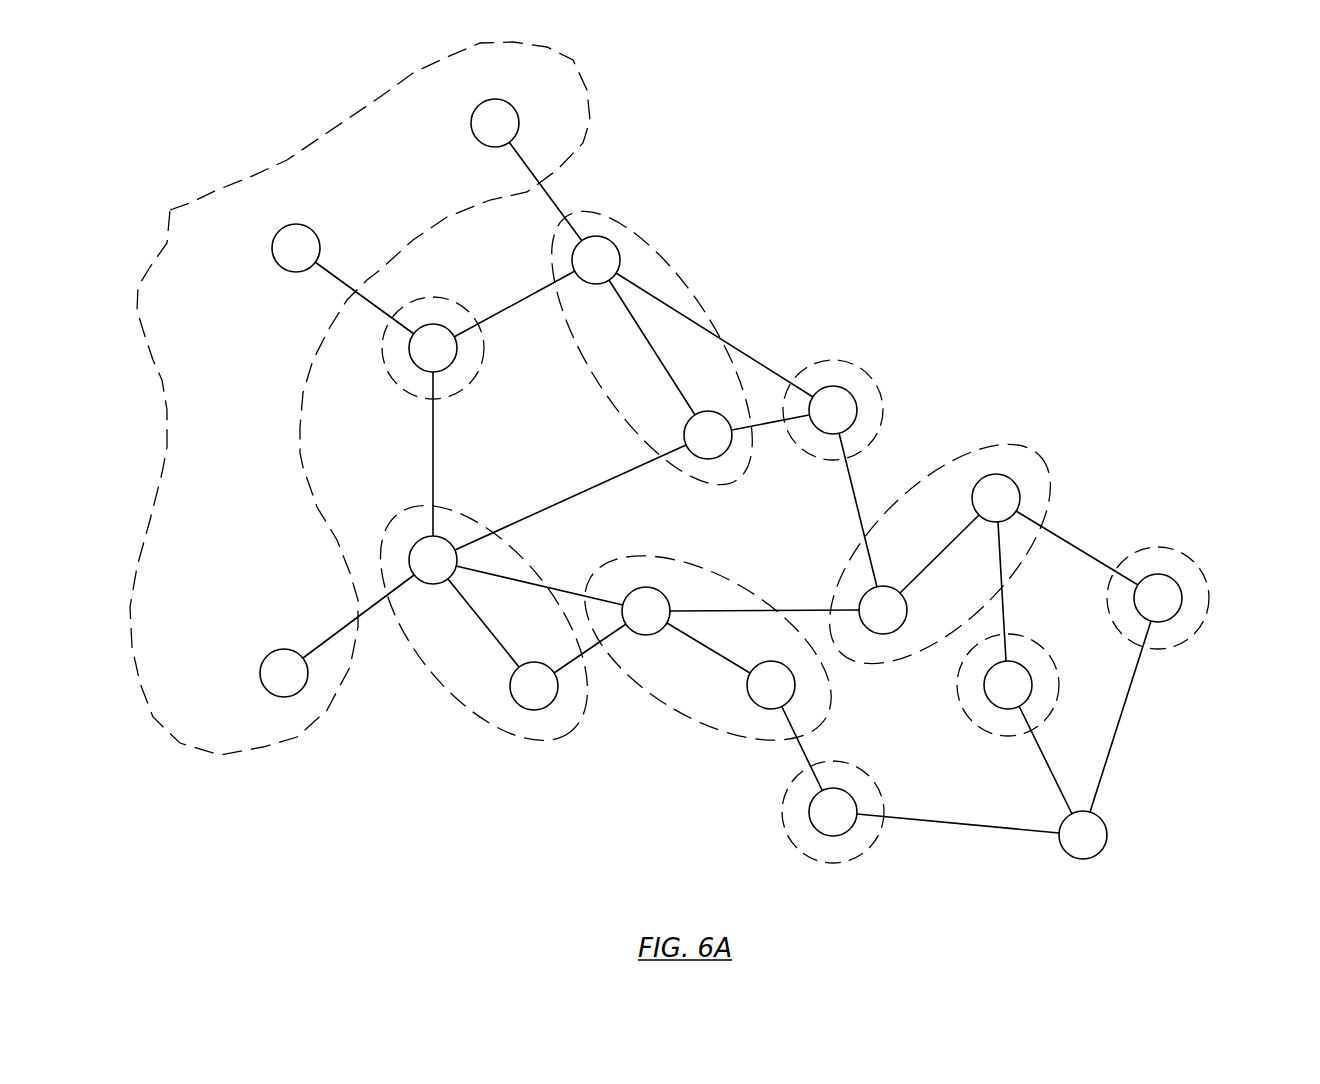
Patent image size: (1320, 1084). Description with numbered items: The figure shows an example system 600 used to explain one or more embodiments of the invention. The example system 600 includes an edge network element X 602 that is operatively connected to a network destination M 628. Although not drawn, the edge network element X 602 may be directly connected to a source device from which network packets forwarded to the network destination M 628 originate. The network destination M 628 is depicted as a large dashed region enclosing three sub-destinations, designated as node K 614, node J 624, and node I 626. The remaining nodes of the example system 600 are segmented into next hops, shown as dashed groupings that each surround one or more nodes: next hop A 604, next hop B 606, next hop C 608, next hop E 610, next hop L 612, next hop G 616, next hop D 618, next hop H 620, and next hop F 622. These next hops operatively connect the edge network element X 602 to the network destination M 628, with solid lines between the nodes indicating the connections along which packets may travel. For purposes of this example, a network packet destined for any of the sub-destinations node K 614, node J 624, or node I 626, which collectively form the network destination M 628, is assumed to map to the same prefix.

The example system 600 is at (700, 466).
The edge network element X 602 is at (1106, 850).
The next hop A 604 is at (808, 812).
The next hop B 606 is at (992, 705).
The next hop C 608 is at (1164, 573).
The next hop E 610 is at (707, 648).
The next hop L 612 is at (940, 550).
The node K 614 is at (257, 675).
The next hop G 616 is at (484, 623).
The next hop D 618 is at (852, 397).
The next hop H 620 is at (414, 355).
The next hop F 622 is at (651, 347).
The node J 624 is at (267, 241).
The node I 626 is at (468, 124).
The network destination M 628 is at (351, 398).